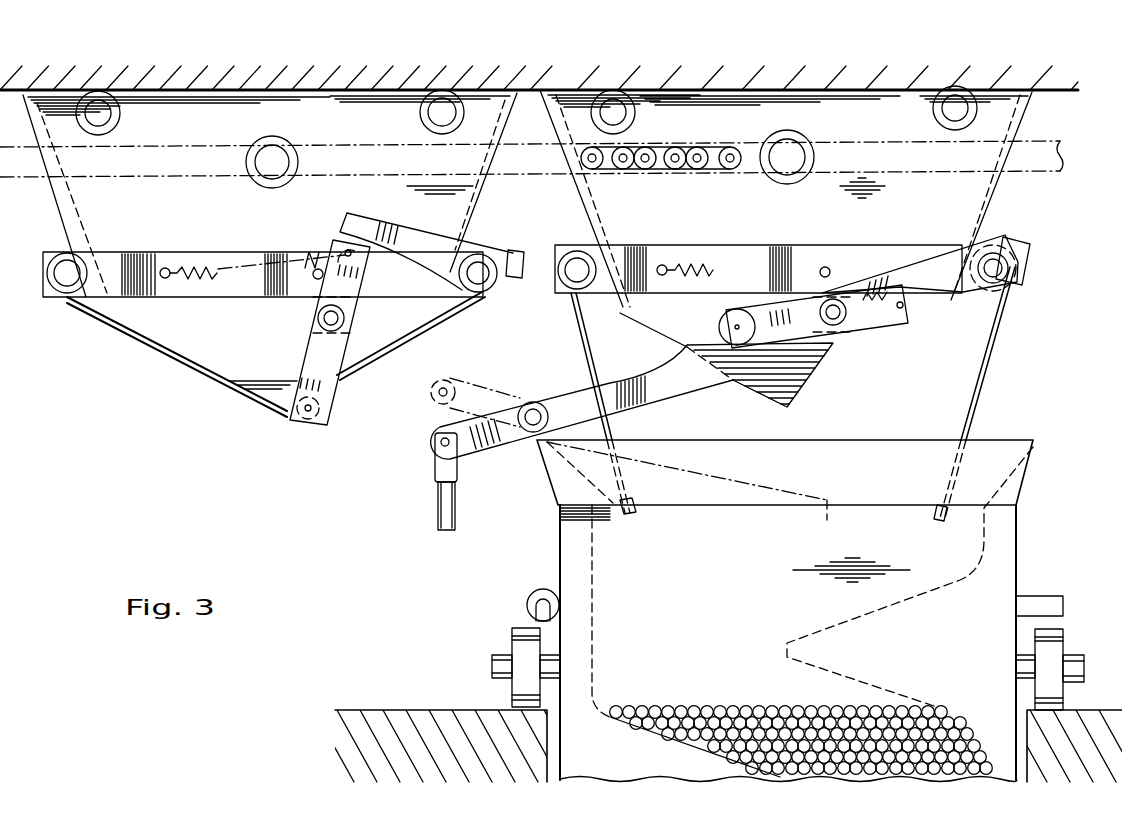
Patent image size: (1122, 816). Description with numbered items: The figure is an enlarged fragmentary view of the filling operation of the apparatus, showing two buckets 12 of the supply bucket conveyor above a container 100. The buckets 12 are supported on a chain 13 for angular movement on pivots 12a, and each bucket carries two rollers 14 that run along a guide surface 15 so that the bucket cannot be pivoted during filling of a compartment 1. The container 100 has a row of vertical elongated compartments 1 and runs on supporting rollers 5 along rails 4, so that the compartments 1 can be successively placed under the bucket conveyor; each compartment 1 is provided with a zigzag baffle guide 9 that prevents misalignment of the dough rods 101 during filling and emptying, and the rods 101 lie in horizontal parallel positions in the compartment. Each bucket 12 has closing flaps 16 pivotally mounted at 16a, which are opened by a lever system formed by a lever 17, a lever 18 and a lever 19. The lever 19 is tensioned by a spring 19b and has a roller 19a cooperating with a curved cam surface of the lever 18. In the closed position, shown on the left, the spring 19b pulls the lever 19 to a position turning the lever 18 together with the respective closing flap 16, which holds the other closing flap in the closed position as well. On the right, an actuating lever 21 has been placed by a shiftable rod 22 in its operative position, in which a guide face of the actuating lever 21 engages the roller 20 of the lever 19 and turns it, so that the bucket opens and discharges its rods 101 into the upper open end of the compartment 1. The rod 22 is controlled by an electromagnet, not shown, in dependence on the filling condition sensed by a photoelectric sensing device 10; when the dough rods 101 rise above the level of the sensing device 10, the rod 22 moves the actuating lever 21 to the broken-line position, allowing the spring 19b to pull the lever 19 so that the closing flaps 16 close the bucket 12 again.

The compartment 1 is at (1000, 541).
The rails 4 is at (415, 710).
The supporting rollers 5 is at (520, 648).
The zigzag baffle guide 9 is at (592, 650).
The photoelectric sensing device 10 is at (533, 598).
The bucket 12 is at (92, 201).
The pivot 12a is at (790, 153).
The chain 13 is at (692, 172).
The rollers 14 is at (97, 118).
The guide surface 15 is at (565, 76).
The closing flaps 16 is at (150, 340).
The pivot of closing flap 16a is at (573, 274).
The lever 17 is at (140, 262).
The lever 18 is at (412, 240).
The lever 19 is at (313, 342).
The roller 19a is at (340, 245).
The spring 19b is at (707, 267).
The roller 20 is at (728, 330).
The actuating lever 21 is at (560, 385).
The shiftable rod 22 is at (445, 508).
The container 100 is at (1018, 505).
The dough rods 101 is at (683, 703).